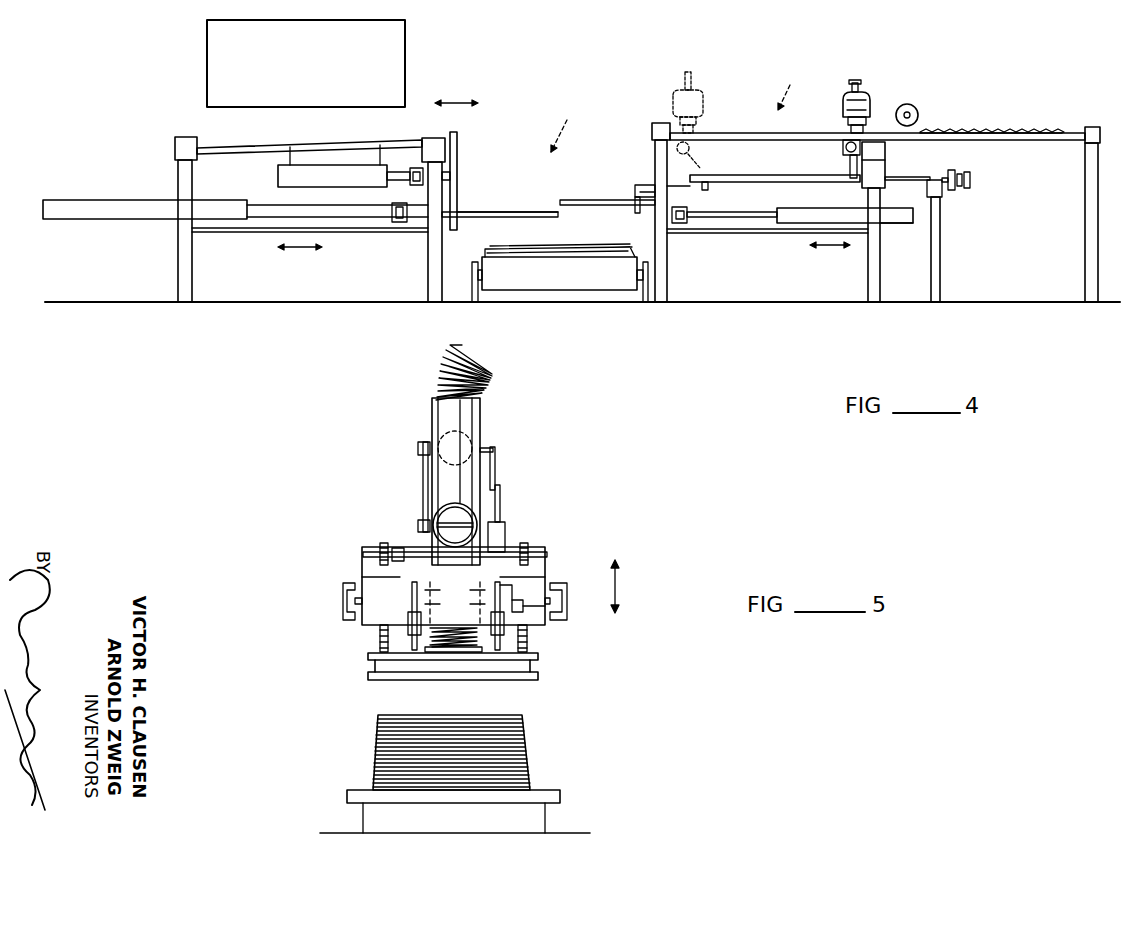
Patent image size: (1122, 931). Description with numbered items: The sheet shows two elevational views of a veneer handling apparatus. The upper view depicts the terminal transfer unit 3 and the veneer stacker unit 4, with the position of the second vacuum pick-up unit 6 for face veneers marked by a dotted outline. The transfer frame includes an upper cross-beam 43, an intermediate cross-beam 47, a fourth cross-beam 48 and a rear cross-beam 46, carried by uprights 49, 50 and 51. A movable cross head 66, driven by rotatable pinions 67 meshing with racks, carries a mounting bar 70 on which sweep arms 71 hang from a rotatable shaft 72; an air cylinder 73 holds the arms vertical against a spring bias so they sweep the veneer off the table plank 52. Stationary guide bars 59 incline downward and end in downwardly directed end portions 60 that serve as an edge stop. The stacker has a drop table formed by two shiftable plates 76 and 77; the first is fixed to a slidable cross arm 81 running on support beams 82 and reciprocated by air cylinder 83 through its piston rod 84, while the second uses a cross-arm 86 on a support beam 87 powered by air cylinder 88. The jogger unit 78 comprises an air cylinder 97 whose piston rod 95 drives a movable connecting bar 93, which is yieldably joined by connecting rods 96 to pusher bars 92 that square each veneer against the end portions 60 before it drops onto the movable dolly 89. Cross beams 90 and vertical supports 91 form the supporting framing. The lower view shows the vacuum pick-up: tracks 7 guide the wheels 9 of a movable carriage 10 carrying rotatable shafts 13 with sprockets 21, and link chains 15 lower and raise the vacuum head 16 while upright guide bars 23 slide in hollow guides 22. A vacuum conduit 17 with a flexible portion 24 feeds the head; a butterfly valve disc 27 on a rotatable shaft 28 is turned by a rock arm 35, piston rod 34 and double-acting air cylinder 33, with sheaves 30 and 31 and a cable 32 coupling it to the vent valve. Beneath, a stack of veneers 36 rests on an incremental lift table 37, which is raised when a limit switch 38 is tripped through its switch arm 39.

In FIG. 4, the terminal transfer unit 3 is at (739, 117).
In FIG. 4, the veneer stacker unit 4 is at (565, 125).
In FIG. 4, the vacuum pick-up and transfer unit 6 is at (405, 65).
In FIG. 5, the tracks 7 is at (345, 585).
In FIG. 5, the wheels 9 is at (562, 600).
In FIG. 5, the movable carriage 10 is at (540, 612).
In FIG. 5, the rotatable shafts 13 is at (505, 548).
In FIG. 5, the link chains 15 is at (380, 638).
In FIG. 5, the vacuum head 16 is at (368, 680).
In FIG. 5, the vacuum conduit 17 is at (480, 410).
In FIG. 5, the sprockets 21 is at (395, 548).
In FIG. 5, the hollow guides 22 is at (485, 617).
In FIG. 5, the upright guide bars 23 is at (455, 596).
In FIG. 5, the flexible portion 24 is at (455, 645).
In FIG. 5, the butterfly valve disc 27 is at (440, 430).
In FIG. 5, the rotatable shaft 28 is at (493, 448).
In FIG. 5, the sheave 30 is at (420, 445).
In FIG. 5, the sheave 31 is at (420, 522).
In FIG. 5, the cable 32 is at (423, 478).
In FIG. 5, the double-acting air cylinder 33 is at (505, 525).
In FIG. 5, the piston rod 34 is at (500, 497).
In FIG. 5, the rock arm 35 is at (495, 468).
In FIG. 5, the stack of veneers 36 is at (530, 773).
In FIG. 5, the incremental lift table 37 is at (548, 818).
In FIG. 5, the limit switch 38 is at (515, 590).
In FIG. 5, the switch arm 39 is at (523, 612).
In FIG. 4, the upper cross-beam 43 is at (652, 127).
In FIG. 4, the rear cross-beam 46 is at (942, 192).
In FIG. 4, the intermediate cross-beam 47 is at (885, 166).
In FIG. 4, the fourth cross-beam 48 is at (708, 190).
In FIG. 4, the upright 49 is at (663, 263).
In FIG. 4, the upright 50 is at (880, 282).
In FIG. 4, the upright 51 is at (940, 248).
In FIG. 4, the table plank 52 is at (762, 195).
In FIG. 4, the stationary guide bars 59 is at (640, 185).
In FIG. 4, the downwardly directed end portion 60 is at (635, 192).
In FIG. 4, the movable cross head 66 is at (848, 120).
In FIG. 4, the rotatable pinions 67 is at (918, 106).
In FIG. 4, the mounting bar 70 is at (843, 147).
In FIG. 4, the sweep arms 71 is at (850, 166).
In FIG. 4, the rotatable shaft 72 is at (885, 150).
In FIG. 4, the air cylinder 73 is at (870, 96).
In FIG. 4, the shiftable plate 76 is at (596, 207).
In FIG. 4, the shiftable plate 77 is at (482, 216).
In FIG. 4, the jogger unit 78 is at (466, 152).
In FIG. 4, the slidable cross arm 81 is at (680, 223).
In FIG. 4, the support beams 82 is at (775, 223).
In FIG. 4, the air cylinder 83 is at (905, 223).
In FIG. 4, the piston rod 84 is at (743, 217).
In FIG. 4, the cross-arm 86 is at (399, 222).
In FIG. 4, the support beam 87 is at (250, 223).
In FIG. 4, the air cylinder 88 is at (85, 197).
In FIG. 4, the movable dolly 89 is at (600, 279).
In FIG. 4, the cross beams 90 is at (432, 143).
In FIG. 4, the vertical supports 91 is at (178, 266).
In FIG. 4, the pusher bars 92 is at (458, 200).
In FIG. 4, the movable connecting bar 93 is at (414, 170).
In FIG. 4, the piston rod 95 is at (395, 172).
In FIG. 4, the connecting rods 96 is at (458, 176).
In FIG. 4, the air cylinder 97 is at (330, 170).